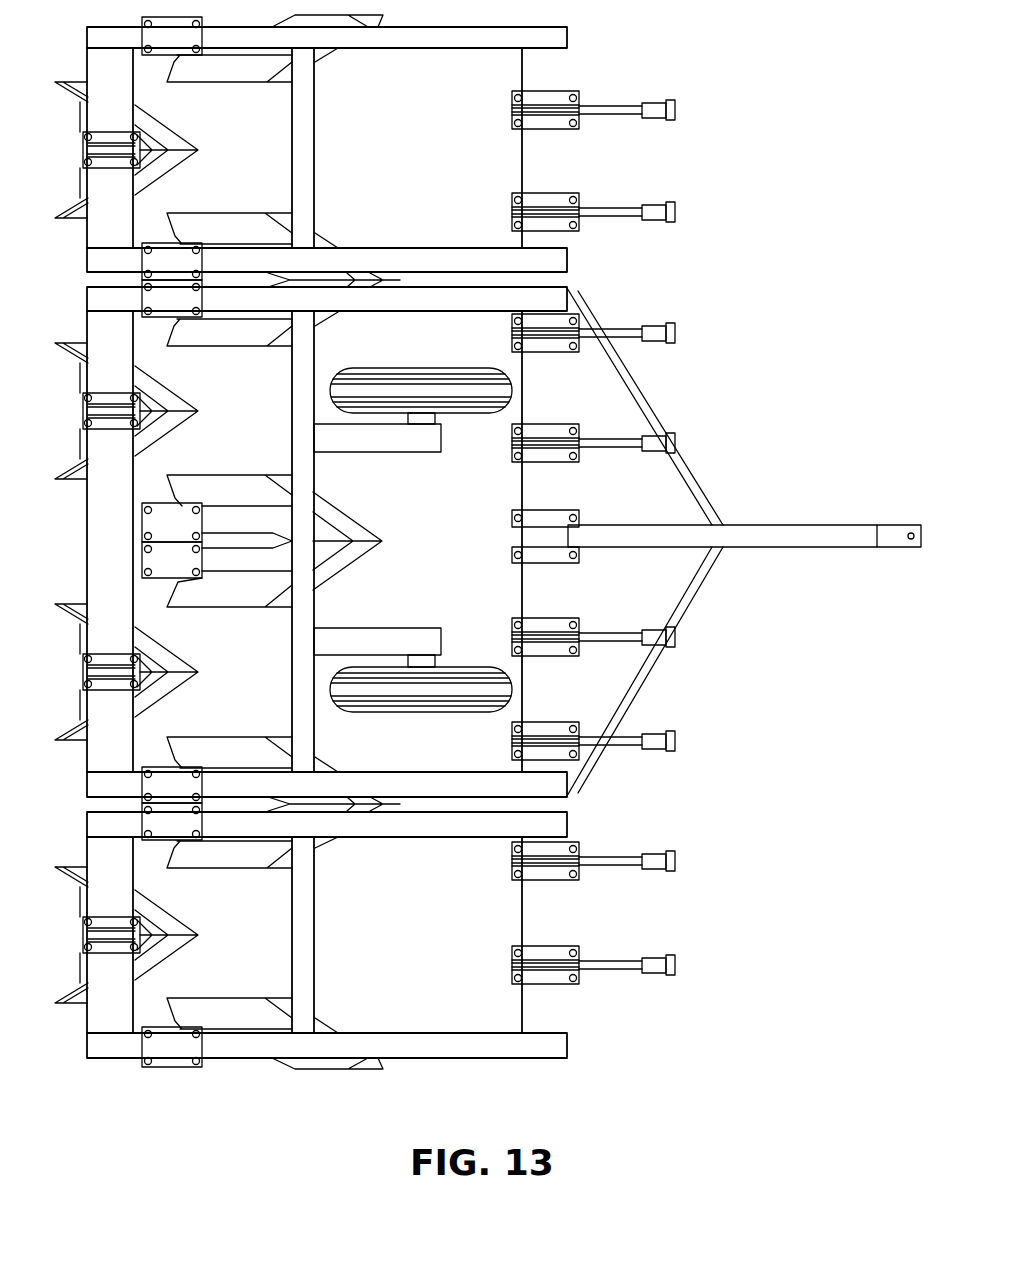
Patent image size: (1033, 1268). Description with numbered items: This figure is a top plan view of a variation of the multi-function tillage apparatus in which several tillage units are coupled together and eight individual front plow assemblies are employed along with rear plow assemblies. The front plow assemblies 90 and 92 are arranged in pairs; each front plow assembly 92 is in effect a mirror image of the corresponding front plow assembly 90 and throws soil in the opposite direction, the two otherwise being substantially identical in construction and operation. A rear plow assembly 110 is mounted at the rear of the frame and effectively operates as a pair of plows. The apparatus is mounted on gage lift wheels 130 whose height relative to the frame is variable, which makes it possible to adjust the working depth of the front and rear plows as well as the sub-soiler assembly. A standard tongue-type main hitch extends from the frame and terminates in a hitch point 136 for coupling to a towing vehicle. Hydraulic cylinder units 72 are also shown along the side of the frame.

The hydraulic cylinder 72 is at (675, 106).
The front plow assembly 90 is at (228, 358).
The front plow assembly 92 is at (247, 200).
The rear plow assembly 110 is at (60, 965).
The gage lift wheels 130 is at (422, 725).
The hitch point 136 is at (911, 525).